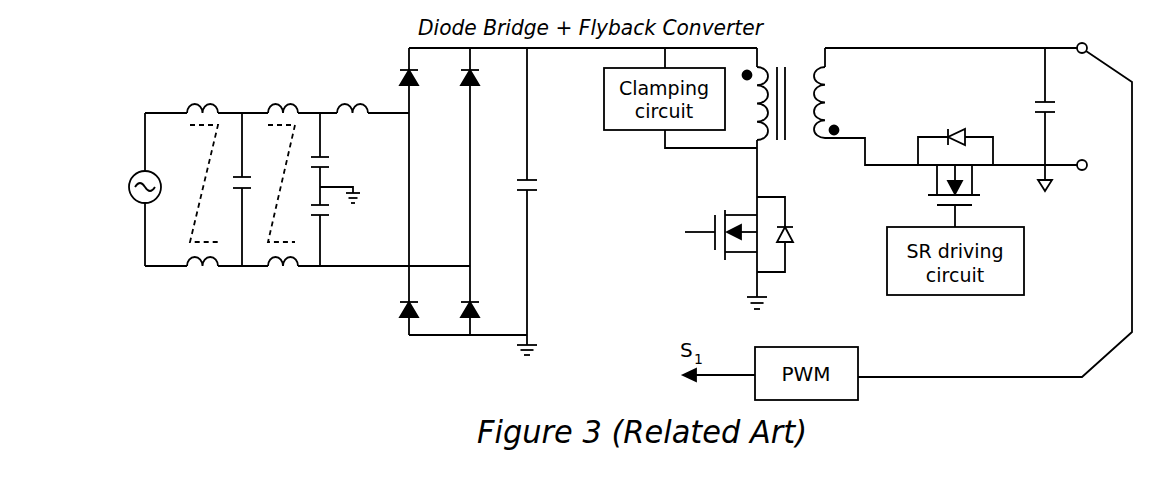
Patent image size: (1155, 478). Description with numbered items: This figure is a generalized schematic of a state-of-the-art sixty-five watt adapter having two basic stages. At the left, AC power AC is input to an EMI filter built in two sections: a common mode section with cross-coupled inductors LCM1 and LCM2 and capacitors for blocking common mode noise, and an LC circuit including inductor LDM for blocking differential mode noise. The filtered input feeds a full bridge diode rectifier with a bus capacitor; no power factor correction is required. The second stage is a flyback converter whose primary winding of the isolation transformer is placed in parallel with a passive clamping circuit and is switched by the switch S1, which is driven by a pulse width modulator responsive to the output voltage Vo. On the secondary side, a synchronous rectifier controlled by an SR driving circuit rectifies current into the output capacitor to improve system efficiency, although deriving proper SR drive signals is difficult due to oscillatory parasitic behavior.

The AC input AC is at (124, 189).
The cross-coupled inductor L_CM1 LCM1 is at (209, 167).
The cross-coupled inductor L_CM2 LCM2 is at (287, 167).
The inductor L_DM LDM is at (349, 90).
The switch S1 is at (735, 234).
The output voltage Vo is at (1060, 155).